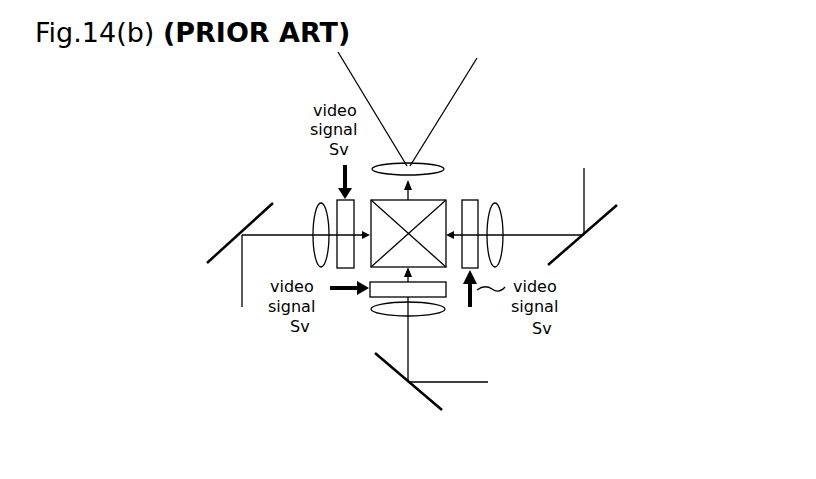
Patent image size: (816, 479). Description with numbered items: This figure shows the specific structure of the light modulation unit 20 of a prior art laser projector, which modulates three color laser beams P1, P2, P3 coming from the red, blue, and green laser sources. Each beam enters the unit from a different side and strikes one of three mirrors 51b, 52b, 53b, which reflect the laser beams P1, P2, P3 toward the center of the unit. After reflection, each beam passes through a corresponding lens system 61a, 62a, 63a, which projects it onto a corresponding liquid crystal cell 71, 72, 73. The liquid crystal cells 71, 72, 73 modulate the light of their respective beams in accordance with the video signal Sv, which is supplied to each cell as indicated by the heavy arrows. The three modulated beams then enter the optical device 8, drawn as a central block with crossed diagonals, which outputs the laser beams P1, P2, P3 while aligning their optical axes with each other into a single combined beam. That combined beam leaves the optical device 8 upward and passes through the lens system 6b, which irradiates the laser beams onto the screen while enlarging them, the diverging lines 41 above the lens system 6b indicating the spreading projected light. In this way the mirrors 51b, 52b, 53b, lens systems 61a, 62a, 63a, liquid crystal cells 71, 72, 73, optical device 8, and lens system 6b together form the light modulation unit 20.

The light modulation unit 20 is at (655, 116).
The projection light / screen direction 41 is at (447, 85).
The lens system 6b is at (440, 167).
The optical device 8 is at (438, 198).
The liquid crystal cell 73 is at (337, 198).
The lens system 63a is at (322, 205).
The liquid crystal cell 71 is at (473, 196).
The lens system 61a is at (501, 205).
The liquid crystal cell 72 is at (452, 300).
The lens system 62a is at (435, 318).
The mirror 53b is at (240, 232).
The laser beam P3 is at (240, 300).
The mirror 51b is at (603, 217).
The laser beam P1 is at (586, 184).
The mirror 52b is at (422, 395).
The laser beam P2 is at (473, 385).